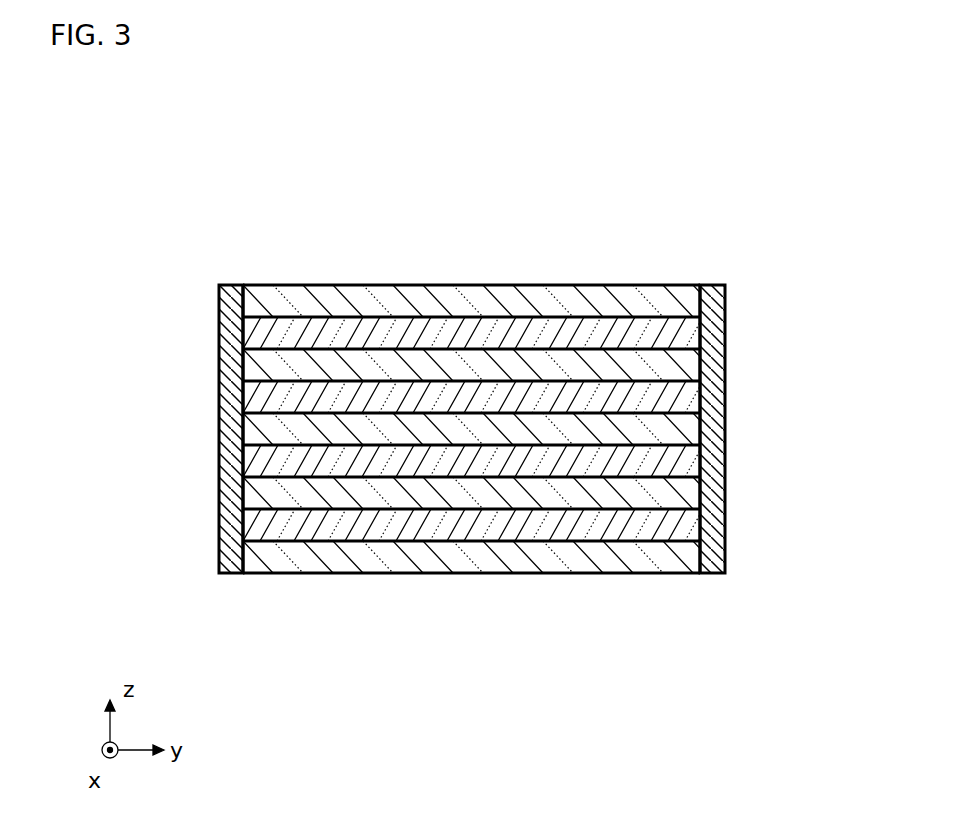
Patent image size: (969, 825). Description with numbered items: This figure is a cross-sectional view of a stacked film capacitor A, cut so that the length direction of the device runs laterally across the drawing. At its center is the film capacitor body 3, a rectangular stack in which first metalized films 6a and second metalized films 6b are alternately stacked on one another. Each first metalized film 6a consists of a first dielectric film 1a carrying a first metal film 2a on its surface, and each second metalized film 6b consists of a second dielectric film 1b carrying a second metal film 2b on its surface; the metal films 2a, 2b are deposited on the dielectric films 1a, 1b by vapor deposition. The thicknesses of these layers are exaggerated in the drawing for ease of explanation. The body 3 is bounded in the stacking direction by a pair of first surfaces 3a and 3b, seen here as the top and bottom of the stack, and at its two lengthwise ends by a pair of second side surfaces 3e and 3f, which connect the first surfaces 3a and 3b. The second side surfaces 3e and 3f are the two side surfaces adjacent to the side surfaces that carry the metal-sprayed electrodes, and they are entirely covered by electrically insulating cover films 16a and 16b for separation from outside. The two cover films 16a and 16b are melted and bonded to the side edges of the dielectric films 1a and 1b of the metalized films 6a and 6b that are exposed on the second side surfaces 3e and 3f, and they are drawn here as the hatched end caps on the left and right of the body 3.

The stacked film capacitor A is at (673, 88).
The film capacitor body 3 is at (308, 125).
The first metalized film 6a is at (298, 188).
The second metalized film 6b is at (475, 188).
The first dielectric film 1a is at (444, 550).
The second dielectric film 1b is at (537, 497).
The first metal film 2a is at (318, 285).
The second metal film 2b is at (632, 467).
The first surface 3a is at (281, 274).
The first surface 3b is at (503, 585).
The second side surface 3e is at (247, 274).
The second side surface 3f is at (706, 274).
The cover film 16a is at (219, 397).
The cover film 16b is at (725, 425).